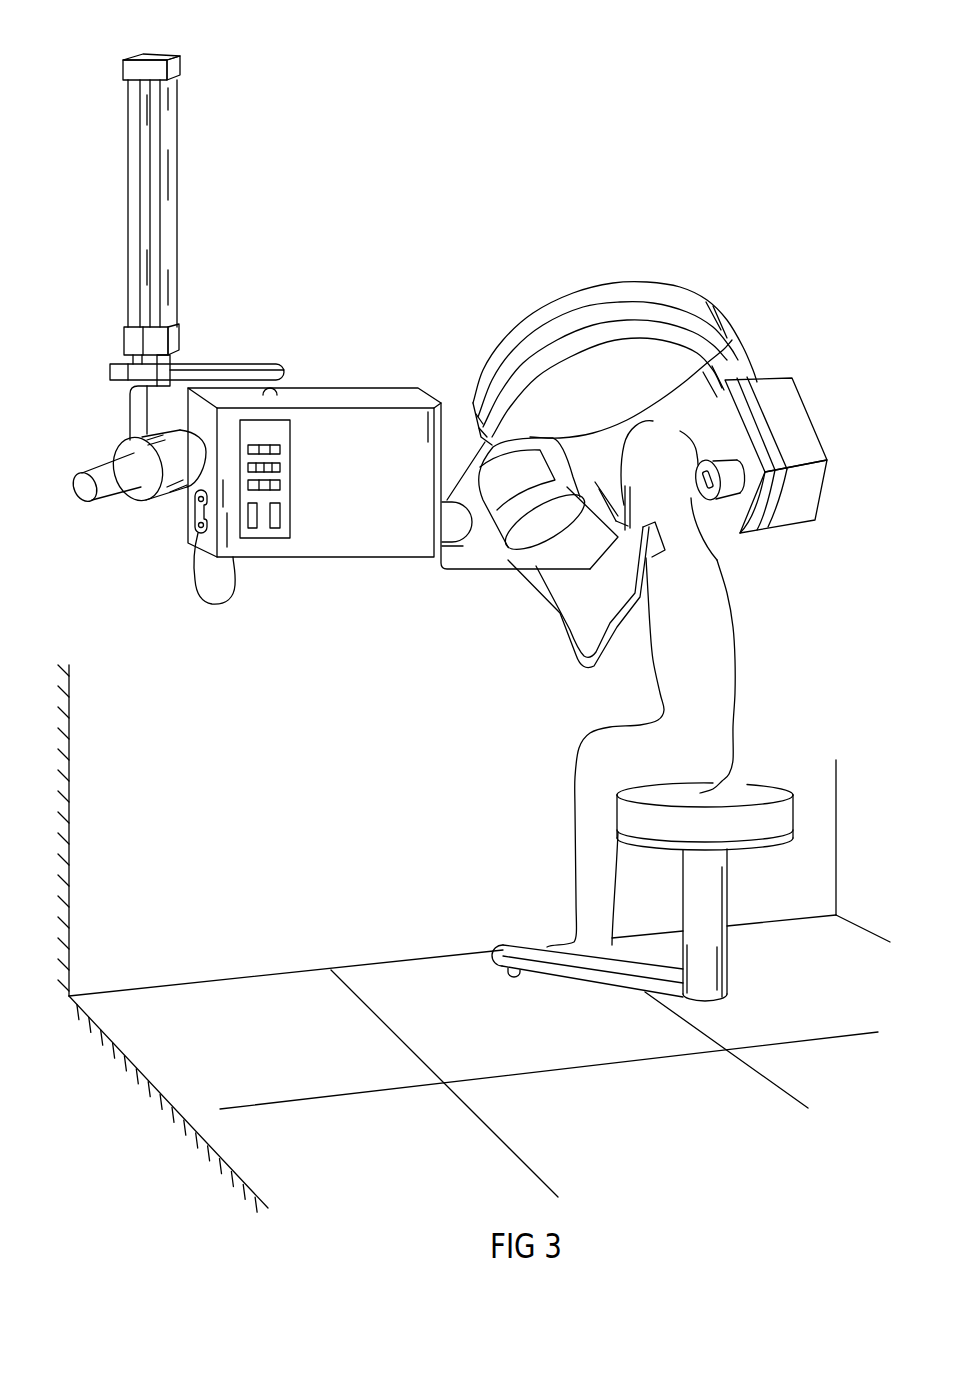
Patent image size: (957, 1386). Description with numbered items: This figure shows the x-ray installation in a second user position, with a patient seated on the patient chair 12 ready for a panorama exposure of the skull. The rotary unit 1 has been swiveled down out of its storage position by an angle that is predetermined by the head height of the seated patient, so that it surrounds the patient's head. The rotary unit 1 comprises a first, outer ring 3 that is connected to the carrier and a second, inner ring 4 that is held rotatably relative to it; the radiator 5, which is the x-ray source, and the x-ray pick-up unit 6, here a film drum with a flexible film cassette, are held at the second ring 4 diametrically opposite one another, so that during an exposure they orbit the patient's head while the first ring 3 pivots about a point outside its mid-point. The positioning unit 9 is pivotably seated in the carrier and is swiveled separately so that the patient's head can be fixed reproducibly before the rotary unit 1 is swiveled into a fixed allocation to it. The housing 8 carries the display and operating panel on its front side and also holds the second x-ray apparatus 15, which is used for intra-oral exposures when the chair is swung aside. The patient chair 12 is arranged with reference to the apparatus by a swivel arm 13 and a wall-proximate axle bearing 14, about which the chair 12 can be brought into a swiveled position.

The rotary unit 1 is at (628, 338).
The first ring 3 is at (709, 354).
The second ring 4 is at (690, 333).
The radiator 5 is at (793, 410).
The x-ray pick-up unit 6 is at (518, 533).
The housing 8 is at (337, 558).
The positioning unit 9 is at (558, 638).
The patient chair 12 is at (753, 790).
The swivel arm 13 is at (602, 979).
The axle bearing 14 is at (515, 983).
The second x-ray apparatus 15 is at (188, 240).